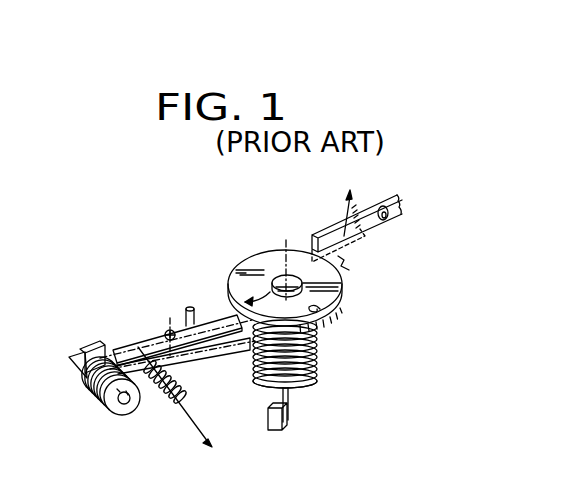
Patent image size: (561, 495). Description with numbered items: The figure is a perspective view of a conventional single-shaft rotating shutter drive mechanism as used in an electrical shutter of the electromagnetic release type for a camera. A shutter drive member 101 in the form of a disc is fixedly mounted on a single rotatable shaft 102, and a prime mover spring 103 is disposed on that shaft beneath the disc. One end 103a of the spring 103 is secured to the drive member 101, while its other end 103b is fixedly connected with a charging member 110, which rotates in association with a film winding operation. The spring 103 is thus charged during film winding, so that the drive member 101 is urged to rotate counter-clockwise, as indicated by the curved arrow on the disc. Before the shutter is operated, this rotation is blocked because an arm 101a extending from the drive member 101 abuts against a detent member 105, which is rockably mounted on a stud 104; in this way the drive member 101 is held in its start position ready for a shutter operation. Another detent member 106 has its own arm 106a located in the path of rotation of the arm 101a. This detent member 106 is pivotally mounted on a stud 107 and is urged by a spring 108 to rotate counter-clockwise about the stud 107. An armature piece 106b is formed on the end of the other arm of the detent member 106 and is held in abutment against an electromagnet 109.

The shutter drive member 101 is at (253, 255).
The arm 101a is at (349, 268).
The rotatable shaft 102 is at (286, 252).
The prime mover spring 103 is at (319, 363).
The one end of spring 103a is at (335, 310).
The other end of spring 103b is at (290, 400).
The stud 104 is at (398, 217).
The detent member 105 is at (359, 238).
The detent member 106 is at (142, 330).
The arm 106a is at (222, 315).
The armature piece 106b is at (98, 349).
The stud 107 is at (171, 353).
The spring 108 is at (154, 387).
The electromagnet 109 is at (100, 396).
The charging member 110 is at (275, 430).